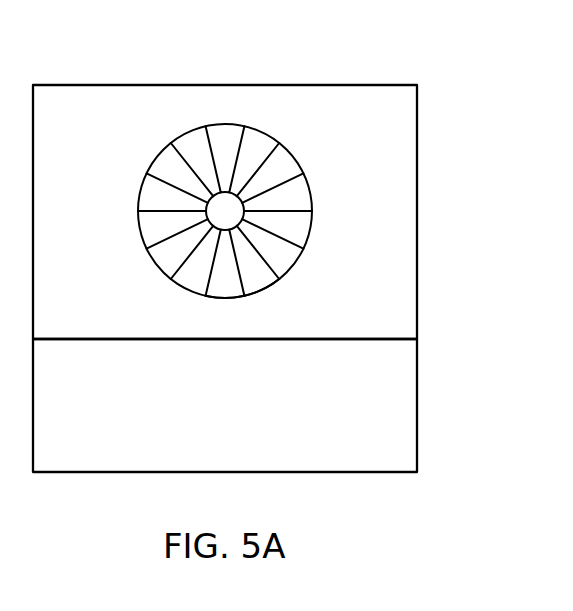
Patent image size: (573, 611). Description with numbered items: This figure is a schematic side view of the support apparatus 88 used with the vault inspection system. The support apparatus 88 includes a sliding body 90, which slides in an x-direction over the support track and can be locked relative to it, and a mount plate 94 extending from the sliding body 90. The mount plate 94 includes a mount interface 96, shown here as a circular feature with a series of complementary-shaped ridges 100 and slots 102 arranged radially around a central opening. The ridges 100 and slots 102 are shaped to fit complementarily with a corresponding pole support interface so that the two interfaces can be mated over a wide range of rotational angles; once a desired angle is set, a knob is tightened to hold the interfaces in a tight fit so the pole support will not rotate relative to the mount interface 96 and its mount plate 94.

The support apparatus 88 is at (391, 44).
The sliding body 90 is at (402, 392).
The mount plate 94 is at (402, 137).
The mount interface 96 is at (283, 124).
The ridges 100 is at (290, 183).
The slots 102 is at (227, 283).